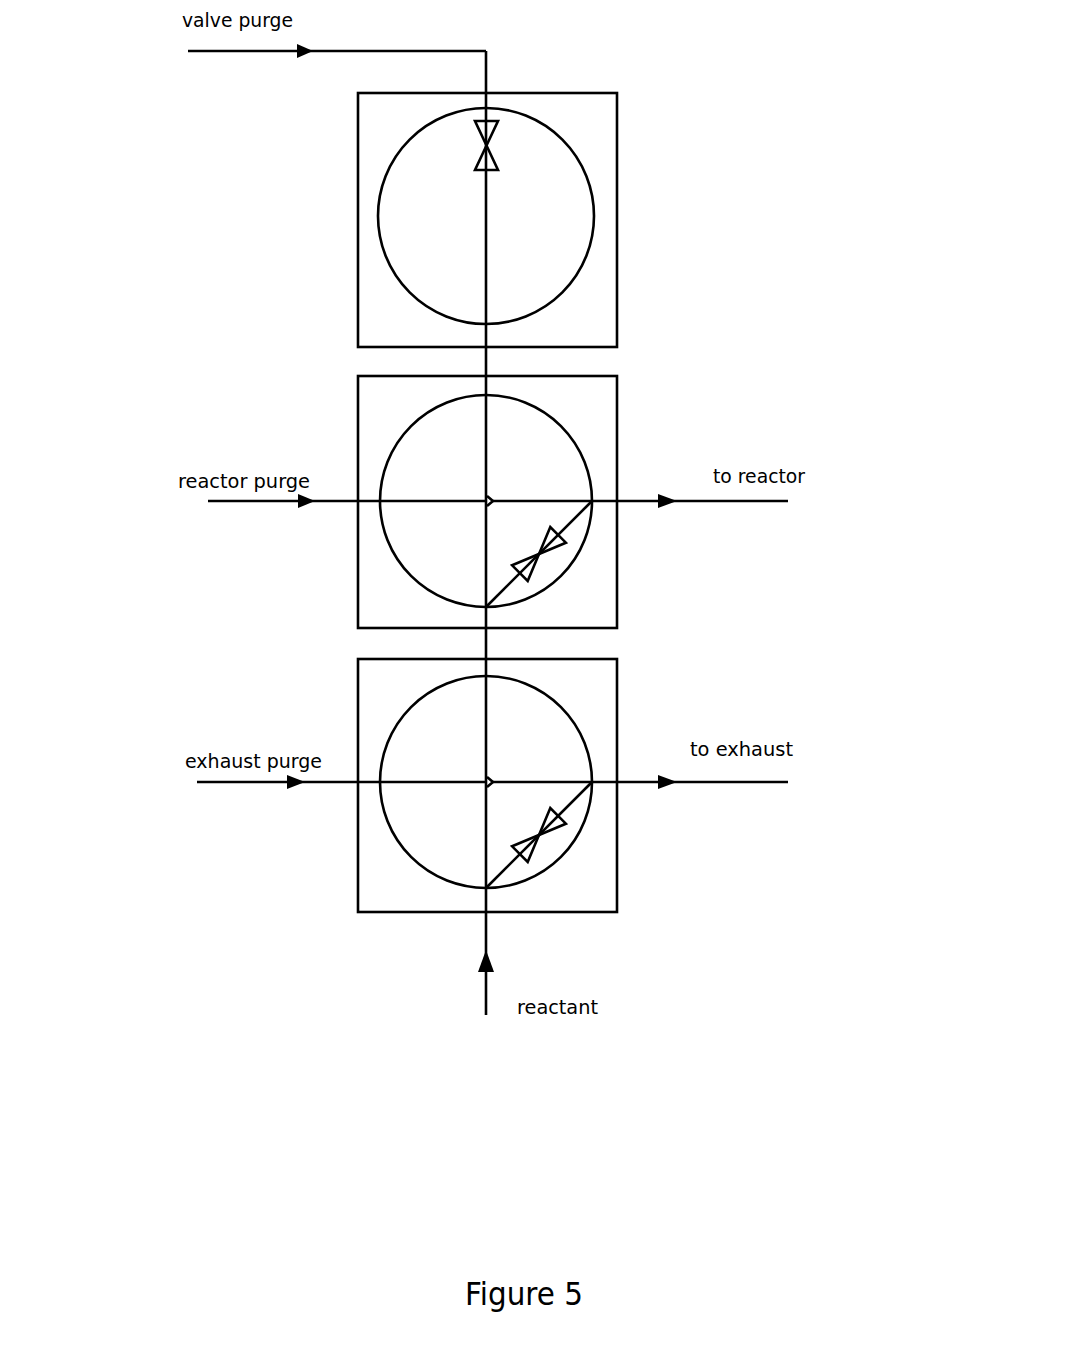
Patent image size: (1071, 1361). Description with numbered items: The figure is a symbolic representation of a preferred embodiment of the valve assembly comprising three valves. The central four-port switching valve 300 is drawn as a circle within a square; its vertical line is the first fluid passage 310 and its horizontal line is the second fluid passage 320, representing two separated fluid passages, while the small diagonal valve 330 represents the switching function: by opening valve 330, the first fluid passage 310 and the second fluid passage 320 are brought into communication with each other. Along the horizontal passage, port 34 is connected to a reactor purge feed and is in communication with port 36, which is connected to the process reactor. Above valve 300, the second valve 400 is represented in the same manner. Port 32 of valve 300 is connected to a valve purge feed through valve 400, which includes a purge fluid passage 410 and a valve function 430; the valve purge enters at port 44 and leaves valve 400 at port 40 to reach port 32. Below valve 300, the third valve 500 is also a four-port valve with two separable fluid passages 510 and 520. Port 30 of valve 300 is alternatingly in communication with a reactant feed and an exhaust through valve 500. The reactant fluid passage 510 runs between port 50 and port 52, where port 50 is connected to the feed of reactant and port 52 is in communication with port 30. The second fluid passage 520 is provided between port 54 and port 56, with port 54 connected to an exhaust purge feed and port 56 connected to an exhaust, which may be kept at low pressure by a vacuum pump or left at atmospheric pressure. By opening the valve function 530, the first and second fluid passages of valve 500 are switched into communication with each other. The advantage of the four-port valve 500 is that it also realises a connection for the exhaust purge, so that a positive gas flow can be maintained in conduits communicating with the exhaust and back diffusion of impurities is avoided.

The port 30 is at (486, 628).
The port 32 is at (486, 376).
The port 34 is at (358, 501).
The port 36 is at (617, 497).
The port 40 is at (486, 348).
The port 44 is at (486, 93).
The port 50 is at (486, 913).
The port 52 is at (486, 657).
The port 54 is at (358, 782).
The port 56 is at (617, 780).
The four-port switching valve 300 is at (617, 423).
The first fluid passage 310 is at (486, 423).
The second fluid passage 320 is at (440, 503).
The valve 330 is at (542, 556).
The valve 400 is at (617, 236).
The purge fluid passage 410 is at (486, 217).
The valve function 430 is at (483, 140).
The valve 500 is at (617, 718).
The reactant fluid passage 510 is at (486, 851).
The second fluid passage 520 is at (420, 783).
The valve function 530 is at (542, 838).